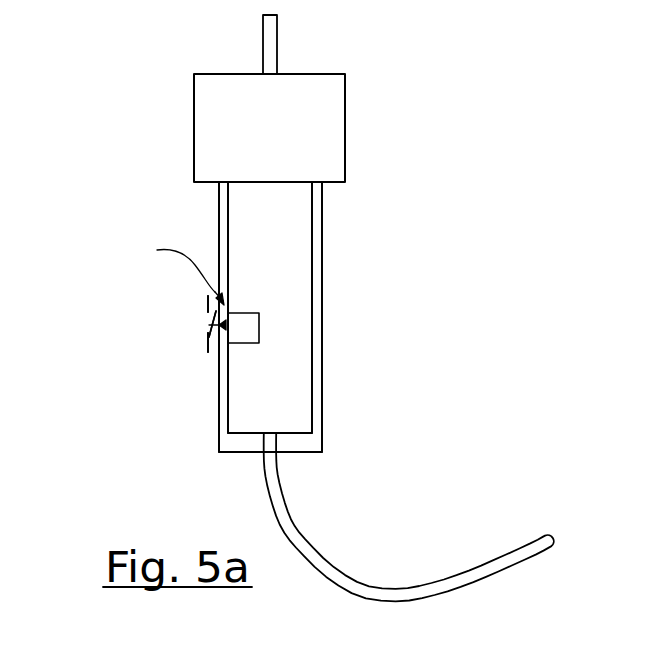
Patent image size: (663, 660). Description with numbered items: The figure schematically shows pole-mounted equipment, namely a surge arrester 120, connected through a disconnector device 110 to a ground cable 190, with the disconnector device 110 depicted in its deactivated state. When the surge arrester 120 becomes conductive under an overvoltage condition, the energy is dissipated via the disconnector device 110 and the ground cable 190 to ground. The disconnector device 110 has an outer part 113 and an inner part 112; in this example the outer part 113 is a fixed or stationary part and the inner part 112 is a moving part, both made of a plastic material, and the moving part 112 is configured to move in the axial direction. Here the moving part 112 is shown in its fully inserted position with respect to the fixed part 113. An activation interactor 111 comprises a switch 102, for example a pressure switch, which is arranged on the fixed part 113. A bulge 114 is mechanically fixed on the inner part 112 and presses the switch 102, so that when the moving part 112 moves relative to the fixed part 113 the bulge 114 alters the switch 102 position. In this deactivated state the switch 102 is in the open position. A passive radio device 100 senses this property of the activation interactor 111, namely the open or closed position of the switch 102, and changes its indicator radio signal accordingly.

The passive radio device 100 is at (230, 343).
The switch 102 is at (208, 340).
The disconnector device 110 is at (483, 198).
The activation interactor 111 is at (100, 235).
The inner part 112 is at (312, 287).
The outer part 113 is at (322, 230).
The bulge 114 is at (171, 272).
The surge arrester 120 is at (345, 126).
The ground cable 190 is at (303, 538).